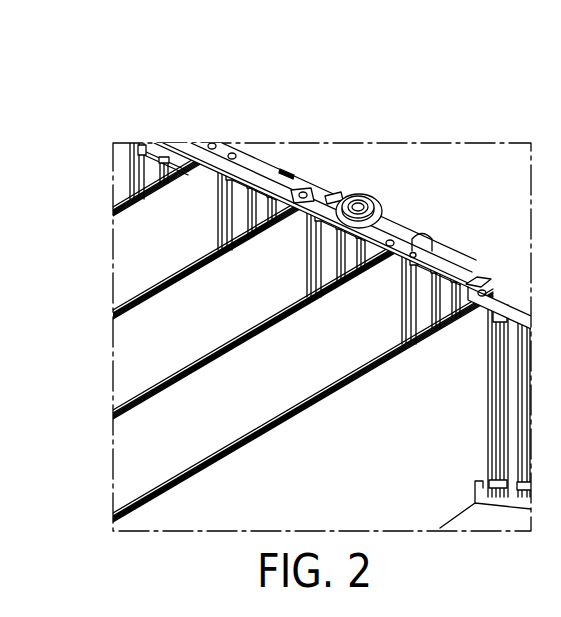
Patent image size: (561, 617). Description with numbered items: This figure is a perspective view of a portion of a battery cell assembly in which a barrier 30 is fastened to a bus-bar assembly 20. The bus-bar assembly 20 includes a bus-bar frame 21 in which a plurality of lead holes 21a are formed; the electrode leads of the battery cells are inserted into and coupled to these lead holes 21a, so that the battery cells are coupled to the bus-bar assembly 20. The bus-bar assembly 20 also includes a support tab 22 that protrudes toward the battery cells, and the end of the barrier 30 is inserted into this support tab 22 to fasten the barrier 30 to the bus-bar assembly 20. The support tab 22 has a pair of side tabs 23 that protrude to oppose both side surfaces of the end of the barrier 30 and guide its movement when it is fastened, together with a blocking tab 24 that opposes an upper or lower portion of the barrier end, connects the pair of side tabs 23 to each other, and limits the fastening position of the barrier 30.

The bus-bar assembly 20 is at (342, 268).
The bus-bar frame 21 is at (322, 203).
The lead hole 21a is at (378, 213).
The support tab 22 is at (485, 290).
The side tab 23 is at (492, 354).
The blocking tab 24 is at (482, 282).
The barrier 30 is at (94, 455).